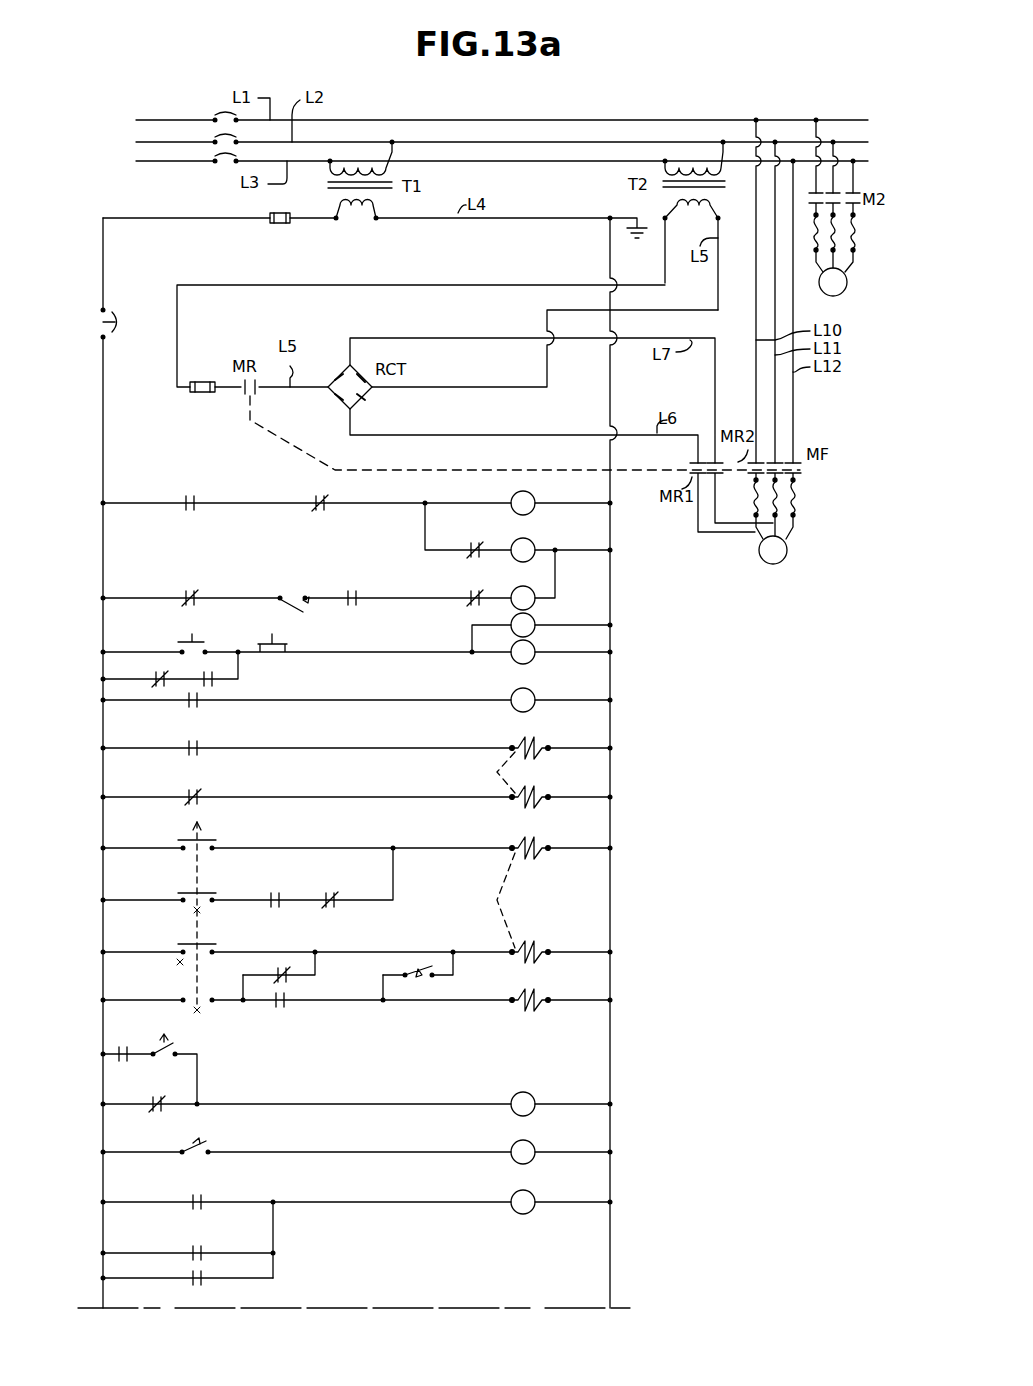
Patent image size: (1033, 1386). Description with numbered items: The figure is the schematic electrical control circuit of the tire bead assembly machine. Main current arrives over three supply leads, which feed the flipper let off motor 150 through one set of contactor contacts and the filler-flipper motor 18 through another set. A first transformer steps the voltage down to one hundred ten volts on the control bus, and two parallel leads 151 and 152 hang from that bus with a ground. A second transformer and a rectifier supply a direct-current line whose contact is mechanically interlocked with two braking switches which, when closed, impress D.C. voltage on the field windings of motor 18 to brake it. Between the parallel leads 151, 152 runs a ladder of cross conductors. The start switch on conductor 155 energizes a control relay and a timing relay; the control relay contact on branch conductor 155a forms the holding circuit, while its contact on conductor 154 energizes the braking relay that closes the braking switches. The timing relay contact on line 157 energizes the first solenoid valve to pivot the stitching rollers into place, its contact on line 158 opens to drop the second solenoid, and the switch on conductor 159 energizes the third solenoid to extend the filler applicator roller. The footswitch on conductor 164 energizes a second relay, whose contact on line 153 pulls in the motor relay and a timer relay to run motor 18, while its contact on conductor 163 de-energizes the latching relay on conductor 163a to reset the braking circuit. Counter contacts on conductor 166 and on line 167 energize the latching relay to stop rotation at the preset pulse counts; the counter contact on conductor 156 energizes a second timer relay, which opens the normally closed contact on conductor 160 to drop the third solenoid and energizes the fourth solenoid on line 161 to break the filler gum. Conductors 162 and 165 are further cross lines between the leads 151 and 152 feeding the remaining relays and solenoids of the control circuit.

The filler-flipper motor 18 is at (787, 553).
The flipper let off motor 150 is at (847, 285).
The parallel lead 151 is at (103, 263).
The parallel lead 152 is at (610, 390).
The cross conductor 153 is at (247, 503).
The cross conductor 154 is at (232, 598).
The cross conductor 155 is at (323, 652).
The branch conductor 155a is at (239, 680).
The cross conductor 156 is at (293, 700).
The cross conductor 157 is at (288, 748).
The cross conductor 158 is at (290, 797).
The cross conductor 159 is at (293, 848).
The cross conductor 160 is at (364, 900).
The cross conductor 161 is at (256, 945).
The cross conductor 162 is at (329, 1004).
The cross conductor 163 is at (267, 1104).
The cross conductor 163a is at (201, 1071).
The cross conductor 164 is at (281, 1152).
The cross conductor 165 is at (300, 1202).
The cross conductor 166 is at (238, 1253).
The cross conductor 167 is at (254, 1281).